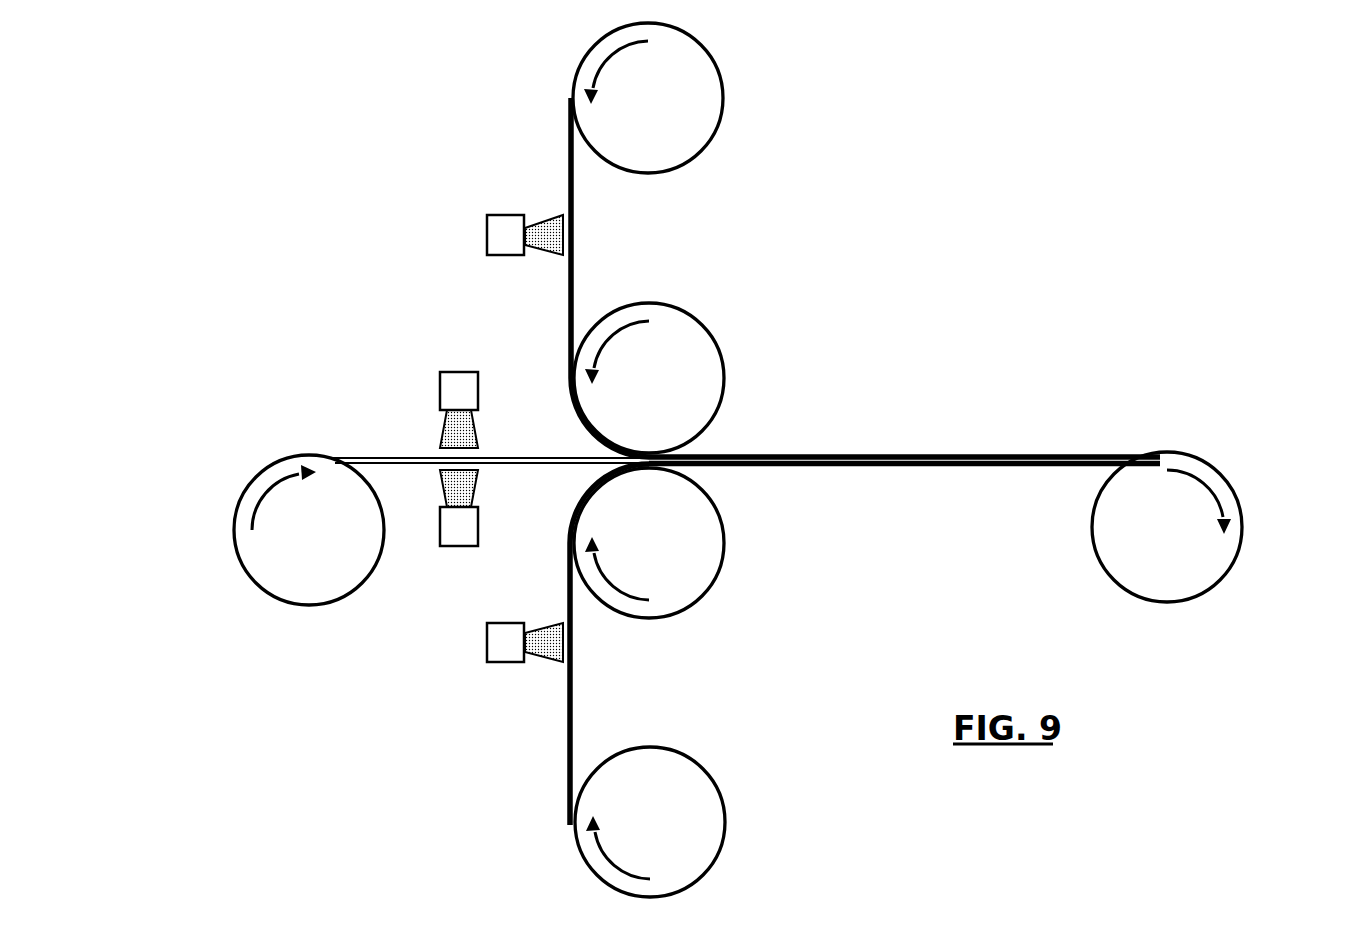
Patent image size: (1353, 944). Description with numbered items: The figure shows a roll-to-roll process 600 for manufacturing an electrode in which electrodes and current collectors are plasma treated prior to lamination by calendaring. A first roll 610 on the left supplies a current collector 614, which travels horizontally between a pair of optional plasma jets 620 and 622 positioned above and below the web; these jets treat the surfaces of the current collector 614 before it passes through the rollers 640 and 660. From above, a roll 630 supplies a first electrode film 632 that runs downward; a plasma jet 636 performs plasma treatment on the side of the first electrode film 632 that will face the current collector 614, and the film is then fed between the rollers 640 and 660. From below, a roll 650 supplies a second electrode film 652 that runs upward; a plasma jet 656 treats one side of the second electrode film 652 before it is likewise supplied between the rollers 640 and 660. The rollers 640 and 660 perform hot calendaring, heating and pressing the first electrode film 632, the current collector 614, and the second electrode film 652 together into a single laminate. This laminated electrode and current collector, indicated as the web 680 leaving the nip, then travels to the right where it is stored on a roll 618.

The roll-to-roll process 600 is at (247, 154).
The first roll 610 is at (308, 606).
The current collector 614 is at (390, 455).
The roll 618 is at (1243, 526).
The plasma jet 620 is at (457, 371).
The plasma jet 622 is at (461, 547).
The roll 630 is at (676, 172).
The first electrode film 632 is at (570, 159).
The plasma jet 636 is at (507, 256).
The roller 640 is at (711, 333).
The roll 650 is at (727, 818).
The second electrode film 652 is at (570, 722).
The plasma jet 656 is at (508, 663).
The roller 660 is at (724, 548).
The laminated web 680 is at (878, 428).